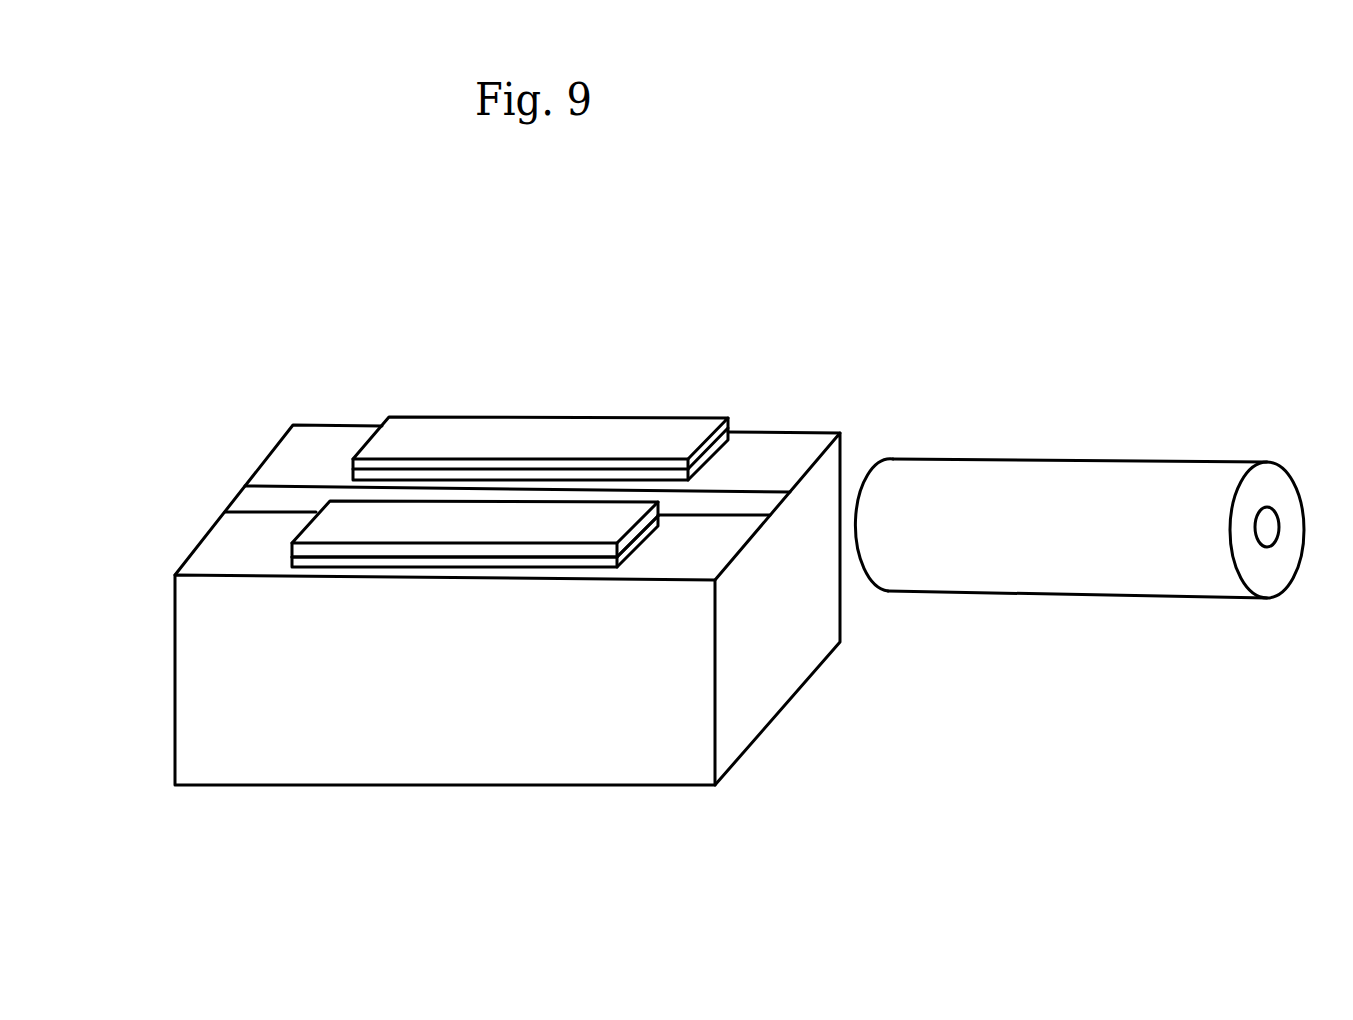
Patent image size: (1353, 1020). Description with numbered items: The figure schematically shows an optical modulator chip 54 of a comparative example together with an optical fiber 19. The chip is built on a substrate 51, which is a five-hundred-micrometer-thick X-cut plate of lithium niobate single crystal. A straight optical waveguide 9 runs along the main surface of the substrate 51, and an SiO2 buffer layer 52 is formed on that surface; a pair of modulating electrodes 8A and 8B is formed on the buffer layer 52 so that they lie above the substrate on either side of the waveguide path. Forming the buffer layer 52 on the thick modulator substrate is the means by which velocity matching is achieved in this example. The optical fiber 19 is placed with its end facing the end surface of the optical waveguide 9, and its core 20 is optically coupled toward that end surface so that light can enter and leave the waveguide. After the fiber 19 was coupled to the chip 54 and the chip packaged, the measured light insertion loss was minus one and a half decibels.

The modulating electrode 8A is at (547, 417).
The modulating electrode 8B is at (475, 510).
The optical modulator chip 54 is at (672, 389).
The optical waveguide 9 is at (767, 497).
The substrate 51 is at (213, 670).
The buffer layer 52 is at (470, 566).
The optical fiber 19 is at (1192, 455).
The core 20 is at (1268, 517).